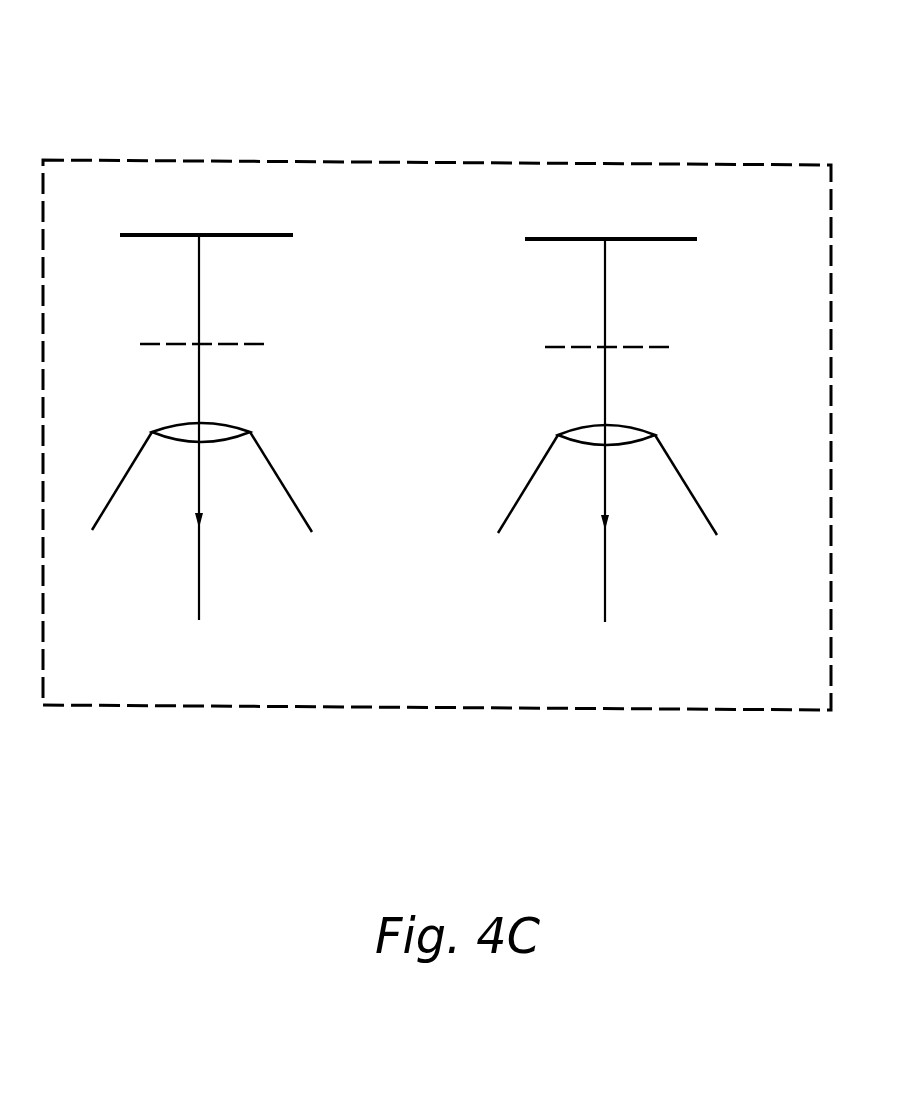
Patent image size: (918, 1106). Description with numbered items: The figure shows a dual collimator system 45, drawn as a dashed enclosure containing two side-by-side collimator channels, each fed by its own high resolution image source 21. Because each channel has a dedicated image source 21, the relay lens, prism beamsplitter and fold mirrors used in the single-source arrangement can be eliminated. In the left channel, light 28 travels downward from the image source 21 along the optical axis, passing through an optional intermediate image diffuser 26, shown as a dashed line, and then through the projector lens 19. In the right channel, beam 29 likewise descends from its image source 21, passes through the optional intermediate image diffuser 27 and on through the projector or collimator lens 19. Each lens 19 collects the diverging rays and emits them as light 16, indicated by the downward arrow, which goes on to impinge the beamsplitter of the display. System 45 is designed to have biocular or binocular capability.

The dual collimator system 45 is at (437, 365).
The image source 21 is at (293, 235).
The intermediate image diffuser 26 is at (238, 345).
The intermediate image diffuser 27 is at (643, 348).
The light 28 is at (199, 383).
The beam 29 is at (605, 387).
The projector lens 19 is at (252, 430).
The light beam 16 is at (197, 522).